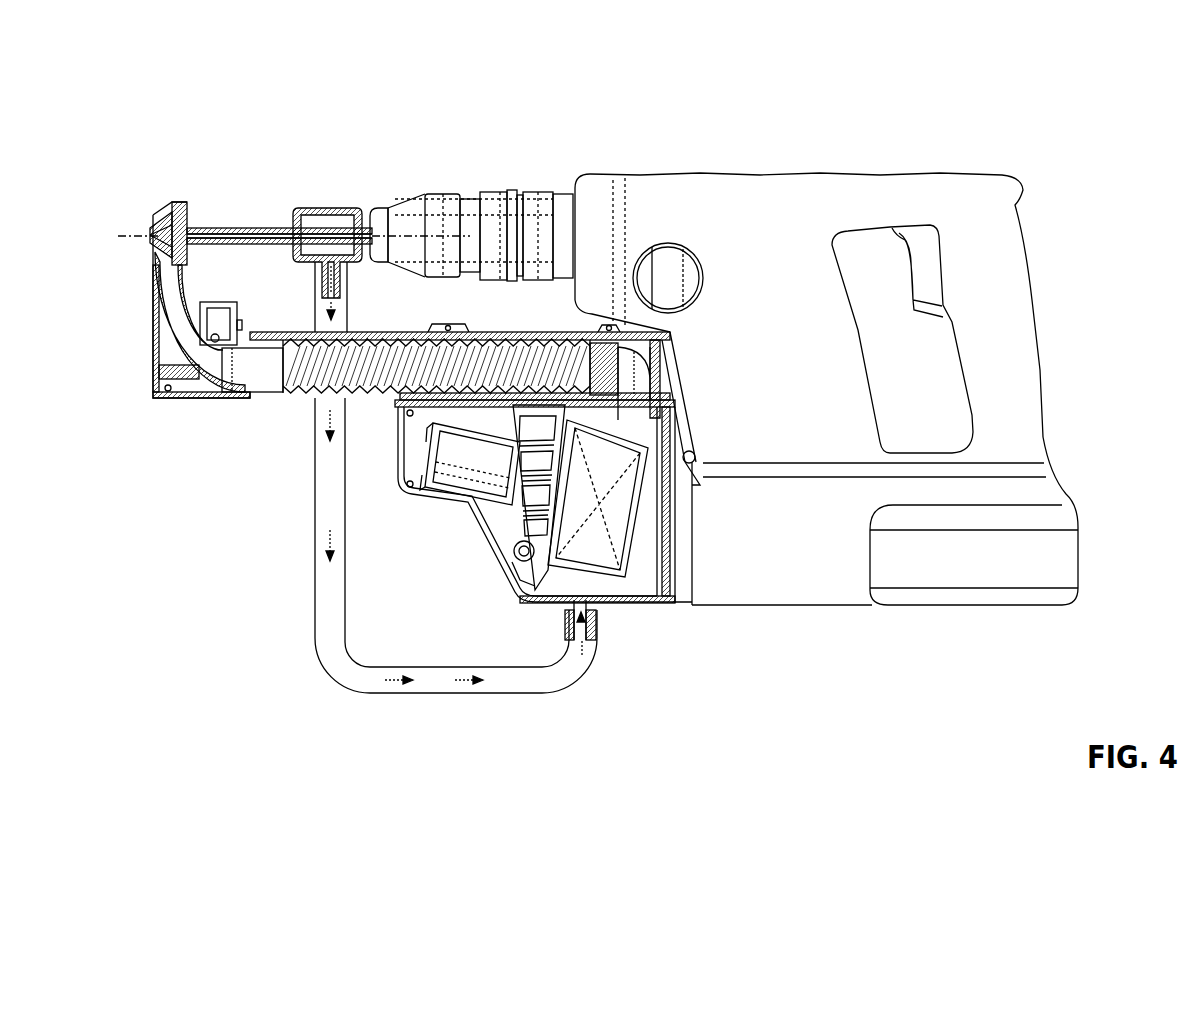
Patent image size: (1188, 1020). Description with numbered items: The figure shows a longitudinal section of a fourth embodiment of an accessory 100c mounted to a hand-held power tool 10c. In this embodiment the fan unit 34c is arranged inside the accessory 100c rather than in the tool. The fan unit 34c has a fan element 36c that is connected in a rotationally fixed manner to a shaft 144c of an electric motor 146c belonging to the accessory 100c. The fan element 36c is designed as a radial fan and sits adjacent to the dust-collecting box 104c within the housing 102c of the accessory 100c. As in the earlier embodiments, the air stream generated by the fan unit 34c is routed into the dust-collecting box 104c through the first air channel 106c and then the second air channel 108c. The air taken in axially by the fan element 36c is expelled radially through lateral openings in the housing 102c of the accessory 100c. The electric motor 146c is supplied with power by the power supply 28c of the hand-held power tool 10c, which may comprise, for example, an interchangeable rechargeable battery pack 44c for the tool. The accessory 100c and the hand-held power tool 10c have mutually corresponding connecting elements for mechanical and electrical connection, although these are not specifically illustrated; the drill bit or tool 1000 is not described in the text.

The hand-held power tool 10c is at (1040, 190).
The power supply 28c is at (1082, 496).
The interchangeable rechargeable battery pack 44c is at (1079, 555).
The drill bit / suction tube 1000 is at (241, 204).
The accessory 100c is at (433, 468).
The housing 102c is at (393, 452).
The dust-collecting box 104c is at (622, 608).
The first air channel 106c is at (303, 350).
The second air channel 108c is at (348, 323).
The shaft 144c is at (490, 526).
The electric motor 146c is at (452, 472).
The fan unit 34c is at (508, 545).
The fan element 36c is at (515, 598).